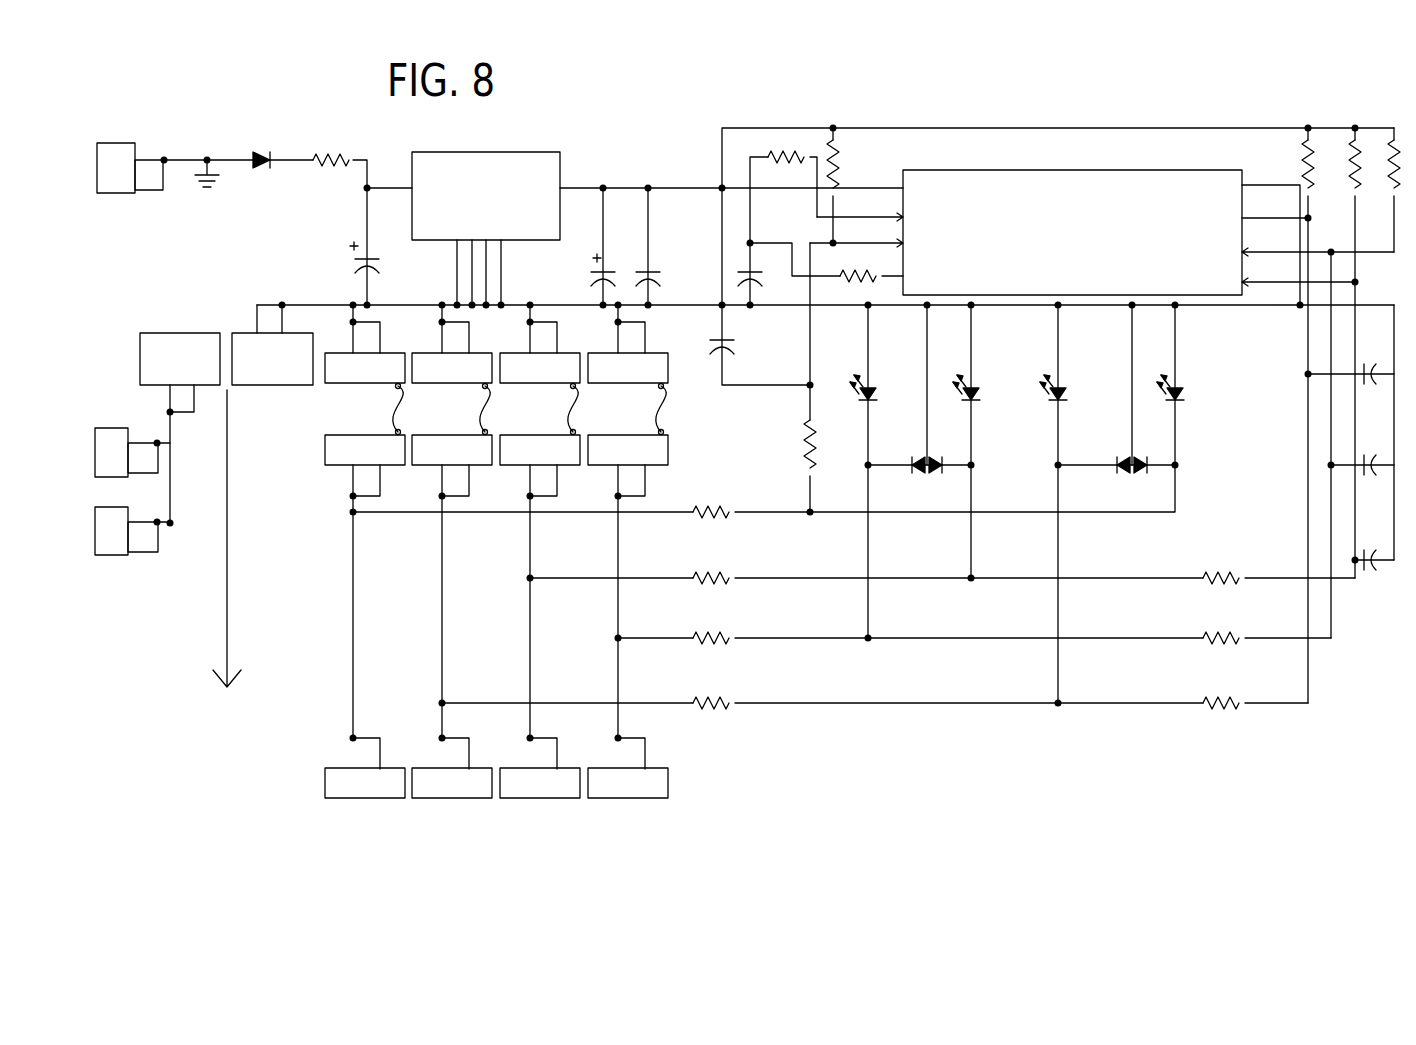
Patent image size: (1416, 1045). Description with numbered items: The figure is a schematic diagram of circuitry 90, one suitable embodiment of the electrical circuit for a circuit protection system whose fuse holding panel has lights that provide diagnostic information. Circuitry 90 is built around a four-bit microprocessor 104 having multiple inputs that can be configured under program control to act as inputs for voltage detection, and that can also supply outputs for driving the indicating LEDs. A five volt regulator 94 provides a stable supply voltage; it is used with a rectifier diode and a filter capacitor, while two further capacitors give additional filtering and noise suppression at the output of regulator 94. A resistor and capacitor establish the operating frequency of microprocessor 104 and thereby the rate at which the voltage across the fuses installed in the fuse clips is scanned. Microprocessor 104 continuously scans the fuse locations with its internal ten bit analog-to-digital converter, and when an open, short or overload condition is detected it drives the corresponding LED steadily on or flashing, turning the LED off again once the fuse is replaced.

The circuitry 90 is at (668, 120).
The five volt regulator 94 is at (528, 152).
The four-bit microprocessor 104 is at (1099, 197).